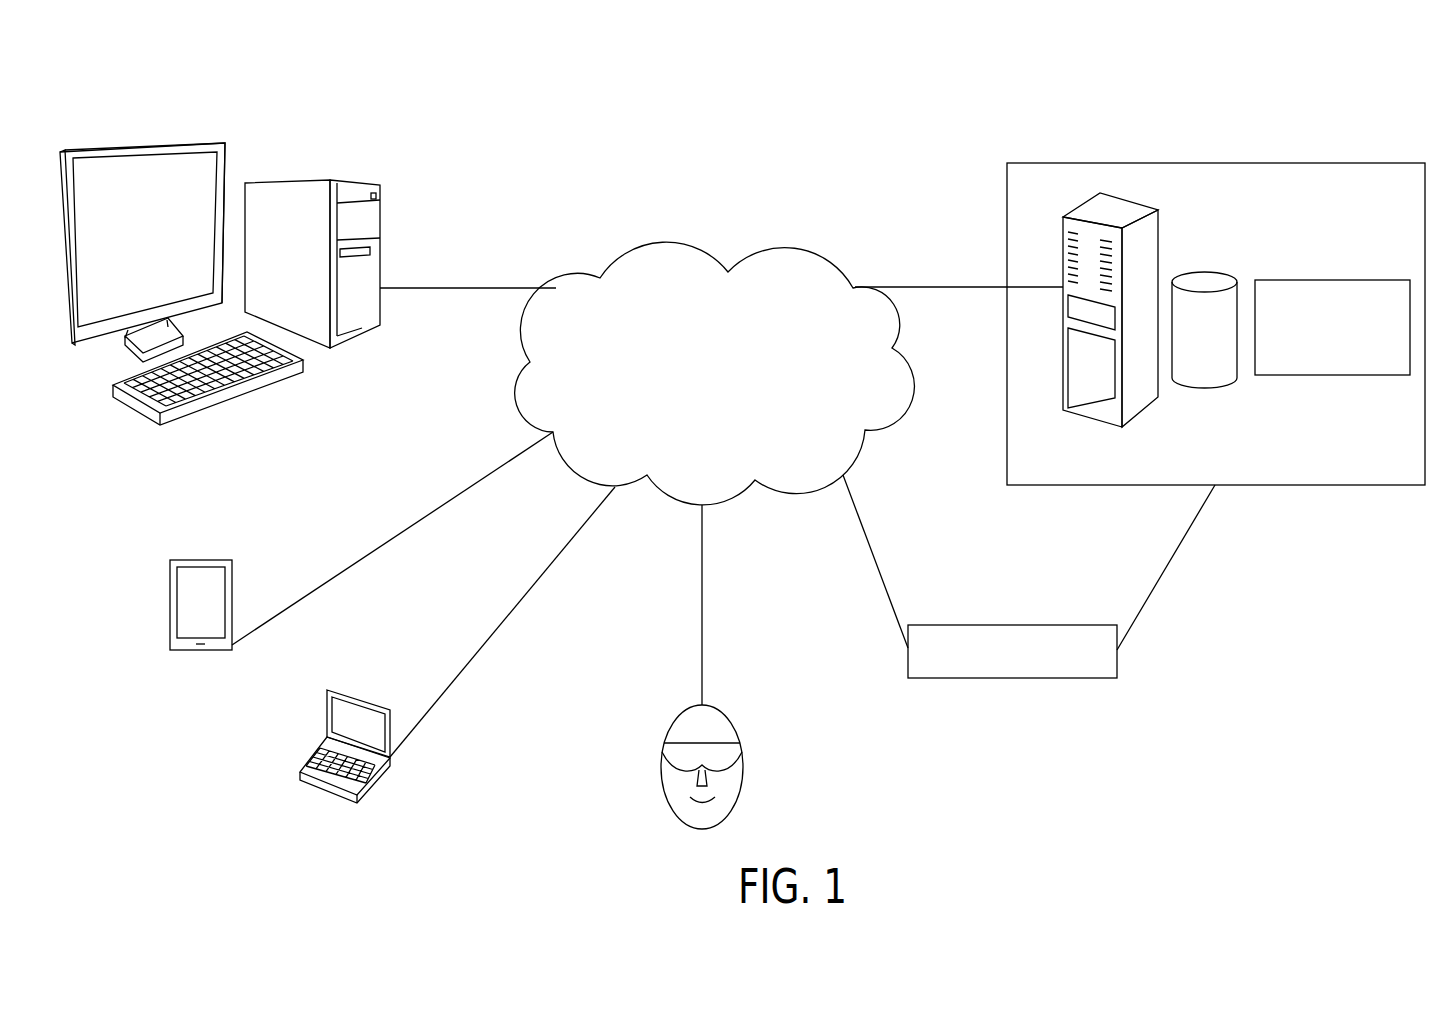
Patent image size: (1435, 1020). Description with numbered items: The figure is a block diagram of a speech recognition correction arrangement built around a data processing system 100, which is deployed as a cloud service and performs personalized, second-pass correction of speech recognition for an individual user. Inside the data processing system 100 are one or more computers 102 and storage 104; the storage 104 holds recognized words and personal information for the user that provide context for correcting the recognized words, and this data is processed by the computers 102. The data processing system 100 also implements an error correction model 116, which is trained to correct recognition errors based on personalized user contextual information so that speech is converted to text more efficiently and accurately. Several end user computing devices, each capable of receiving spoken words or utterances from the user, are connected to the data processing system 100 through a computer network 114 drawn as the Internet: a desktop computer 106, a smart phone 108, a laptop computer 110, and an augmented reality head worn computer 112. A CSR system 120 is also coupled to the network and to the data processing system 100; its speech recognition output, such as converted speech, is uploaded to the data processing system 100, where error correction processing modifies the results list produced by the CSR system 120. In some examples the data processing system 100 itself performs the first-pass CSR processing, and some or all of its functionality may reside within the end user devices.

The data processing system 100 is at (1180, 87).
The computers 102 is at (1138, 210).
The storage 104 is at (1200, 272).
The desktop computer 106 is at (145, 90).
The smart phone 108 is at (212, 560).
The laptop computer 110 is at (367, 700).
The augmented reality head worn computer 112 is at (727, 713).
The computer network 114 is at (740, 142).
The error correction model 116 is at (1312, 377).
The CSR system 120 is at (1010, 678).